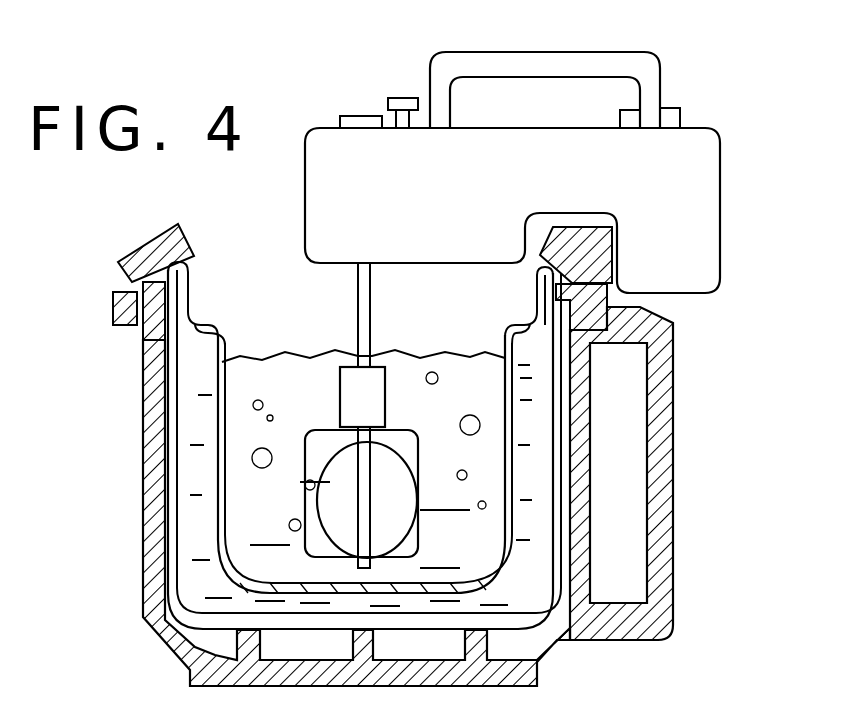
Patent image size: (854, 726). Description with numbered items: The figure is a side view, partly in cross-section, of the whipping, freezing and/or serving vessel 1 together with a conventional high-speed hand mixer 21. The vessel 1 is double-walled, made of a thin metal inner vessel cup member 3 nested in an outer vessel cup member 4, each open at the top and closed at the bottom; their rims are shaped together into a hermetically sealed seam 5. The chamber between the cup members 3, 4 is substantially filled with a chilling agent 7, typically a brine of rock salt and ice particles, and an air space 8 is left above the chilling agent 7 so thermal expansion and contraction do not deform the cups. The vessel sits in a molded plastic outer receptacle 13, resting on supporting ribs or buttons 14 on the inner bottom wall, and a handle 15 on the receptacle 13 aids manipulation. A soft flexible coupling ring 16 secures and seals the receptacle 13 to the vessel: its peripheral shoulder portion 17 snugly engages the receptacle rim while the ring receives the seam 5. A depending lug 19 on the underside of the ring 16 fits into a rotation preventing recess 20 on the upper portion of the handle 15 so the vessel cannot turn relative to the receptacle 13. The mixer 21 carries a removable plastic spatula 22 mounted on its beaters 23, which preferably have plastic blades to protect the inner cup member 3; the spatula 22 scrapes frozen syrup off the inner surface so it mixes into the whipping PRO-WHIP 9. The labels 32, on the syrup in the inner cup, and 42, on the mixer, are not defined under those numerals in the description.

The whipping-freezing and/or serving vessel 1 is at (250, 242).
The inner vessel cup member 3 is at (215, 403).
The outer vessel cup member 4 is at (98, 437).
The seam 5 is at (137, 298).
The chilling agent 7 is at (200, 550).
The air space 8 is at (140, 338).
The PRO-WHIP 9 is at (473, 500).
The outer receptacle 13 is at (150, 498).
The supporting ribs or buttons 14 is at (245, 646).
The handle 15 is at (657, 433).
The coupling ring 16 is at (165, 237).
The peripheral shoulder portion 17 is at (135, 280).
The depending lug 19 is at (604, 286).
The rotation preventing recess 20 is at (600, 326).
The hand mixer 21 is at (744, 146).
The spatula 22 is at (310, 545).
The beaters 23 is at (385, 445).
The cooking liquid 32 is at (374, 529).
The handle 42 is at (673, 122).